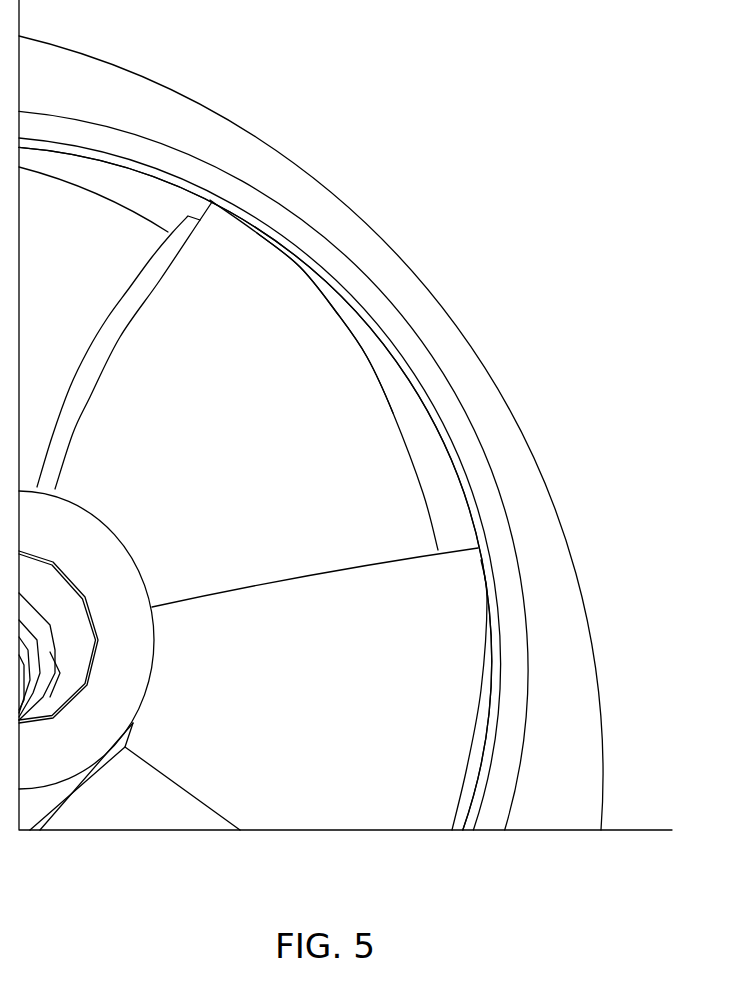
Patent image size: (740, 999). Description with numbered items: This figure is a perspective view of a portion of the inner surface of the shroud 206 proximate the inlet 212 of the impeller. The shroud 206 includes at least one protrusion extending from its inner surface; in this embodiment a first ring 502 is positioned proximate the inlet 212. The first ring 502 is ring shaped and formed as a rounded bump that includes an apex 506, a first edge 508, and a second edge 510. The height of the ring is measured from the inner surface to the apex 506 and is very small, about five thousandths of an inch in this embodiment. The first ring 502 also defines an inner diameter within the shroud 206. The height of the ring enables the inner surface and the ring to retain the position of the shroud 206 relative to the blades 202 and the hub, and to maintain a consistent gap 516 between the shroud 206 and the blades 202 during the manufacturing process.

The blades 202 is at (393, 412).
The shroud 206 is at (287, 188).
The inlet 212 is at (370, 357).
The first ring 502 is at (328, 282).
The apex 506 is at (187, 188).
The first edge 508 is at (143, 164).
The second edge 510 is at (92, 160).
The gap 516 is at (433, 493).